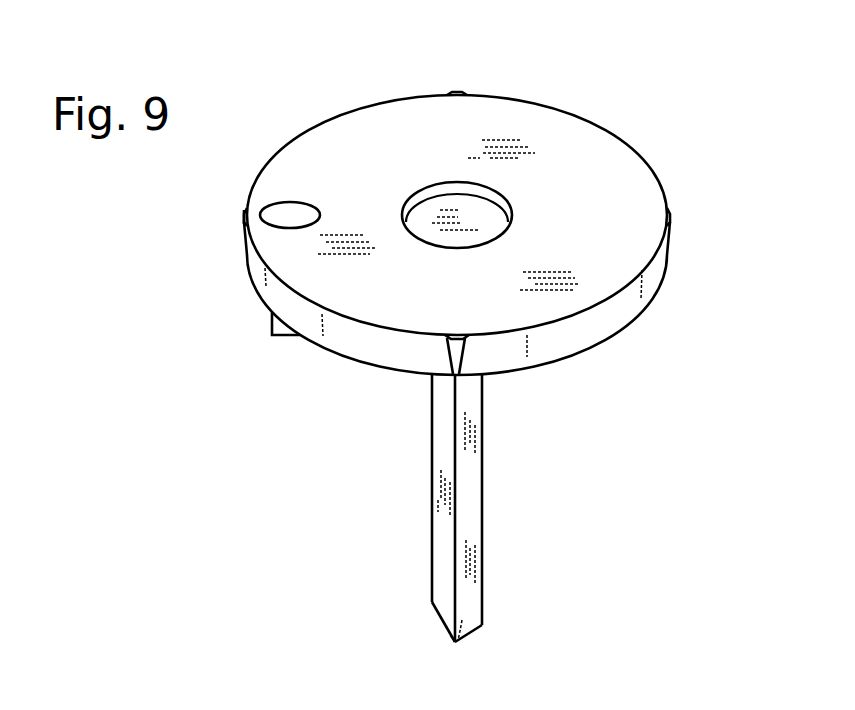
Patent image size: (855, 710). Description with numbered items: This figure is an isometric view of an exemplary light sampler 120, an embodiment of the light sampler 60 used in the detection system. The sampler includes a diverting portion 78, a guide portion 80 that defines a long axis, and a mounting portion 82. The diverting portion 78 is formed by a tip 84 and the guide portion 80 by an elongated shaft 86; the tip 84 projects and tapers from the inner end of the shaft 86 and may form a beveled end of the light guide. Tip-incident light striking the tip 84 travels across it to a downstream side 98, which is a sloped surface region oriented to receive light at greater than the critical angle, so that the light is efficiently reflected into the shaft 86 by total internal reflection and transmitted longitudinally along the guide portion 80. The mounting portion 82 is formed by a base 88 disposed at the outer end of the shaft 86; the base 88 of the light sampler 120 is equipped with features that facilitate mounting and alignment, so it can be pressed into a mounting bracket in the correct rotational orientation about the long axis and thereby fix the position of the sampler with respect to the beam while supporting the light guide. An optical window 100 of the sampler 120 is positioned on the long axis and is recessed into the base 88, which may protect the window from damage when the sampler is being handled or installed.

The light sampler 60 is at (335, 52).
The light sampler embodiment 120 is at (336, 88).
The mounting portion 82 is at (232, 218).
The base 88 is at (247, 250).
The optical window 100 is at (463, 203).
The guide portion 80 is at (426, 492).
The shaft 86 is at (432, 510).
The diverting portion 78 is at (428, 615).
The tip 84 is at (447, 628).
The downstream side 98 is at (459, 645).